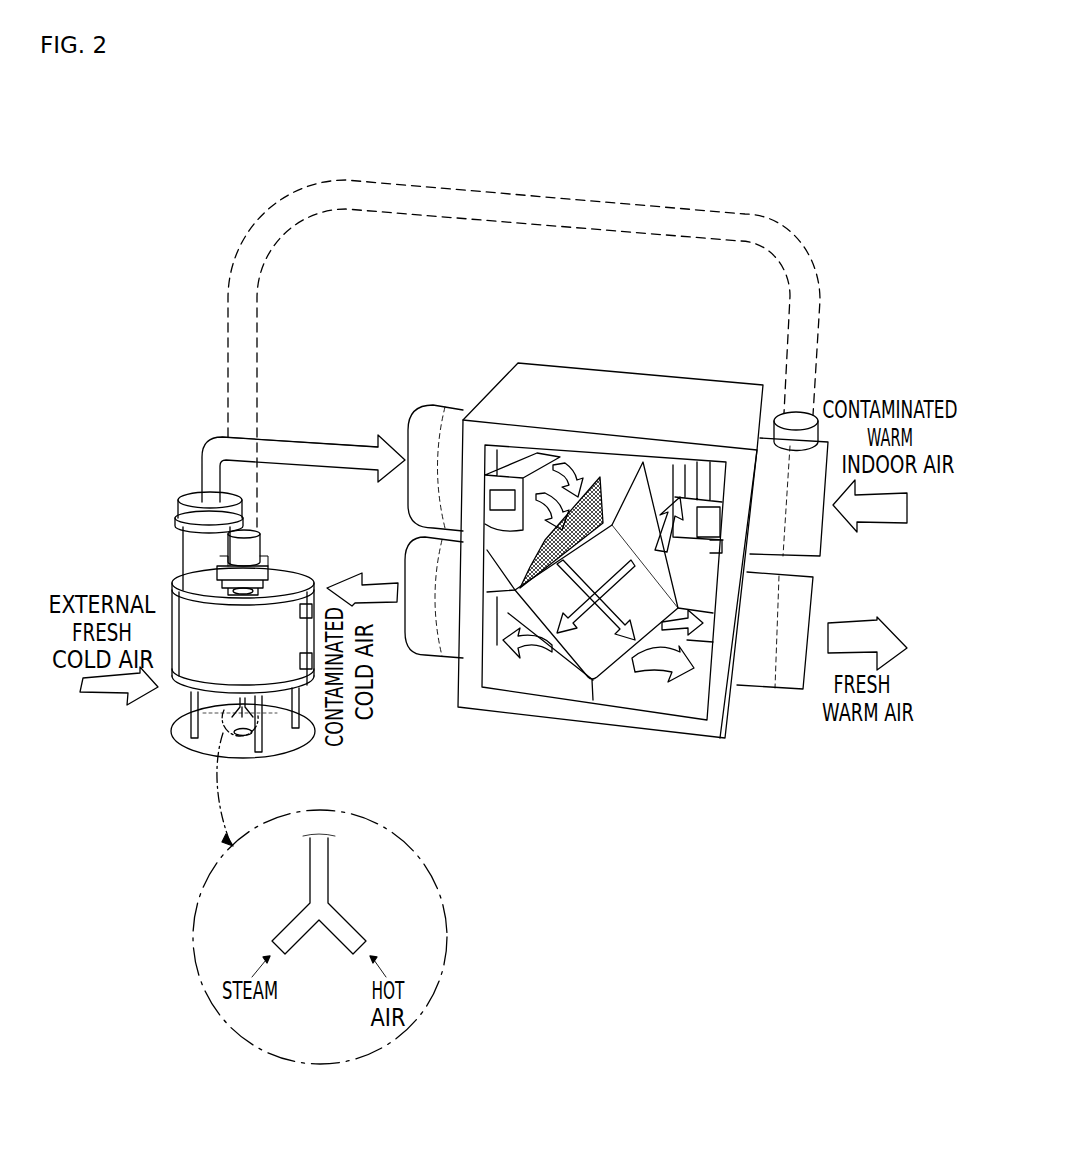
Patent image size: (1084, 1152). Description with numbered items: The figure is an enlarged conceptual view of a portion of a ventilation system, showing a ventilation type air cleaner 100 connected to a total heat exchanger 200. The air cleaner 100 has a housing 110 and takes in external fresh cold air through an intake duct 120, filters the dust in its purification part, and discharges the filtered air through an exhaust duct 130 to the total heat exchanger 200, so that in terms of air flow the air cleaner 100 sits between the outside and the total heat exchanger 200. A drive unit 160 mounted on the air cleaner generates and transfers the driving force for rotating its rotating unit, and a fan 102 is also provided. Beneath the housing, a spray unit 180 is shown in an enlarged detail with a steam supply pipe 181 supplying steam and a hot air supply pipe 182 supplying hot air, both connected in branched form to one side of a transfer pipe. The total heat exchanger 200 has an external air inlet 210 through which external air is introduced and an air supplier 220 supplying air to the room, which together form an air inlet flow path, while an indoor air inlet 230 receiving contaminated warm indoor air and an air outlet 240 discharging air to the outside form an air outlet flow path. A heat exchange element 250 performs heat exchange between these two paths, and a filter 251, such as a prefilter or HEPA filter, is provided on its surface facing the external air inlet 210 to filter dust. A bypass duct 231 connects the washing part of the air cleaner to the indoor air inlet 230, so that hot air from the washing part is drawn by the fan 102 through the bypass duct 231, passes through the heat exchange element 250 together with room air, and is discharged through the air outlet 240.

The ventilation type air cleaner 100 is at (175, 483).
The fan 102 is at (273, 592).
The housing 110 is at (176, 613).
The intake duct 120 is at (168, 708).
The exhaust duct 130 is at (176, 548).
The drive unit 160 is at (252, 530).
The spray unit 180 is at (310, 877).
The steam supply pipe 181 is at (283, 932).
The hot air supply pipe 182 is at (360, 932).
The total heat exchanger 200 is at (698, 370).
The external air inlet 210 is at (442, 408).
The air supplier 220 is at (783, 687).
The indoor air inlet 230 is at (823, 545).
The bypass duct 231 is at (546, 198).
The air outlet 240 is at (433, 657).
The heat exchange element 250 is at (574, 650).
The filter 251 is at (598, 470).